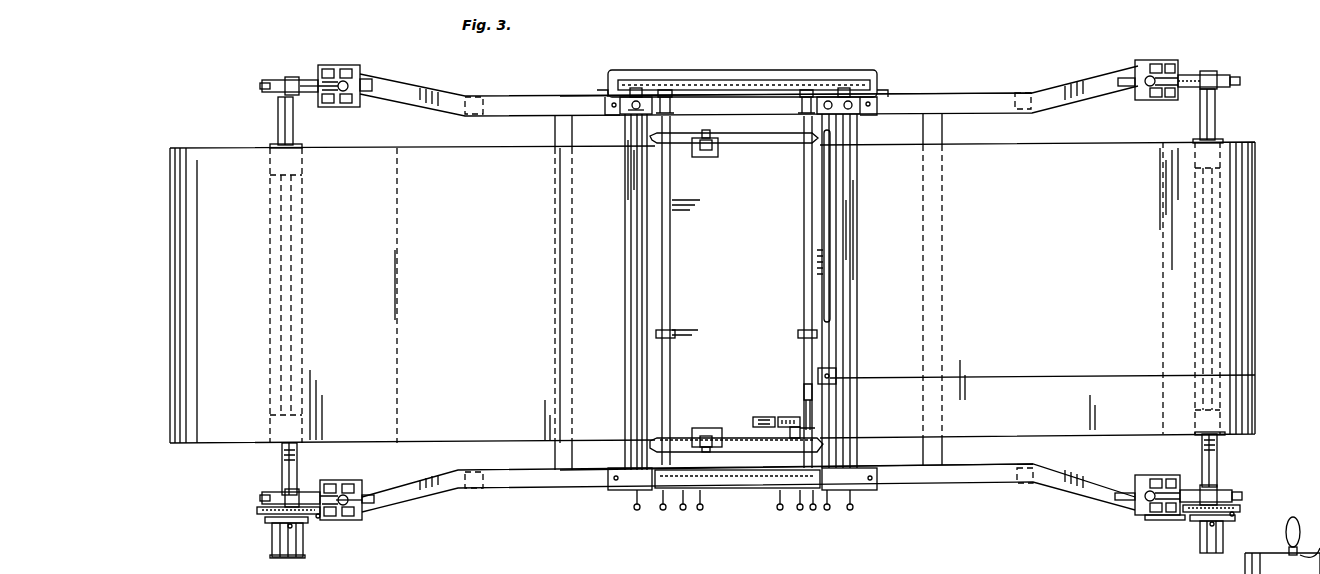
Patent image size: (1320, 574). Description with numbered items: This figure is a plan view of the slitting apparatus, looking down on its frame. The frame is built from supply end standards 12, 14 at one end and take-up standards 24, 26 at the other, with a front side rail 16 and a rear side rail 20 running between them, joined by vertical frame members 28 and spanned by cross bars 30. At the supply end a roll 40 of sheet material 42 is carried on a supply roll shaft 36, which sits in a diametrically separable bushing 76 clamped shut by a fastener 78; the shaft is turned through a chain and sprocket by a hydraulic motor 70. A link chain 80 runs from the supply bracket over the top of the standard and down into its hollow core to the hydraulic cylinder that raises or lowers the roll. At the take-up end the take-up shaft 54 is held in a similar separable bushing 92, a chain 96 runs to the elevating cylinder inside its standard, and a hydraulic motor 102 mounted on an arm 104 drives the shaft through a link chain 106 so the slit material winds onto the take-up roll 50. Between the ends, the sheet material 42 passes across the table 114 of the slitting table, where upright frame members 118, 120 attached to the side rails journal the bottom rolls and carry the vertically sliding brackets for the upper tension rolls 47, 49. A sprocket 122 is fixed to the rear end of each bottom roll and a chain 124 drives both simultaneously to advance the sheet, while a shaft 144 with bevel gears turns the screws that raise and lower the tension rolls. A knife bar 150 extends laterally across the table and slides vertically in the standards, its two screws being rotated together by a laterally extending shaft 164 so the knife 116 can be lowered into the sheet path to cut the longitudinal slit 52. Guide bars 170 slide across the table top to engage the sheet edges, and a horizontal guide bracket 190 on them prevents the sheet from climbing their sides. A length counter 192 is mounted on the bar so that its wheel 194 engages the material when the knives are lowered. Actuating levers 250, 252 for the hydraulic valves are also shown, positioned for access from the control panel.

The supply end standard 12 is at (362, 508).
The supply end standard 14 is at (360, 70).
The front side rail 16 is at (982, 470).
The rear side rail 20 is at (960, 93).
The take-up standard 24 is at (1132, 507).
The take-up standard 26 is at (1146, 60).
The vertical frame member 28 is at (475, 97).
The cross bar 30 is at (556, 131).
The supply roll shaft 36 is at (282, 458).
The roll of sheet material 40 is at (170, 322).
The sheet material 42 is at (490, 314).
The upper tension roll 47 is at (624, 180).
The upper tension roll 49 is at (858, 184).
The take-up roll 50 is at (1258, 204).
The longitudinal slit 52 is at (1040, 375).
The take-up shaft 54 is at (1217, 452).
The hydraulic motor 70 is at (303, 540).
The separable bushing 76 is at (282, 78).
The fastener 78 is at (257, 510).
The link chain 80 is at (328, 82).
The separable bushing 92 is at (1216, 76).
The chain 96 is at (1186, 76).
The hydraulic motor 102 is at (1203, 545).
The arm 104 is at (1240, 508).
The link chain 106 is at (1240, 515).
The table 114 is at (665, 215).
The knife 116 is at (805, 360).
The upright frame member 118 is at (615, 100).
The upright frame member 120 is at (878, 100).
The sprocket 122 is at (656, 82).
The chain 124 is at (700, 82).
The shaft 144 is at (638, 282).
The knife bar 150 is at (830, 330).
The laterally extending shaft 164 is at (813, 212).
The guide bar 170 is at (770, 147).
The horizontal guide bracket 190 is at (705, 152).
The length counter 192 is at (787, 417).
The wheel 194 is at (762, 417).
The actuating lever 250 is at (798, 512).
The actuating lever 252 is at (793, 533).